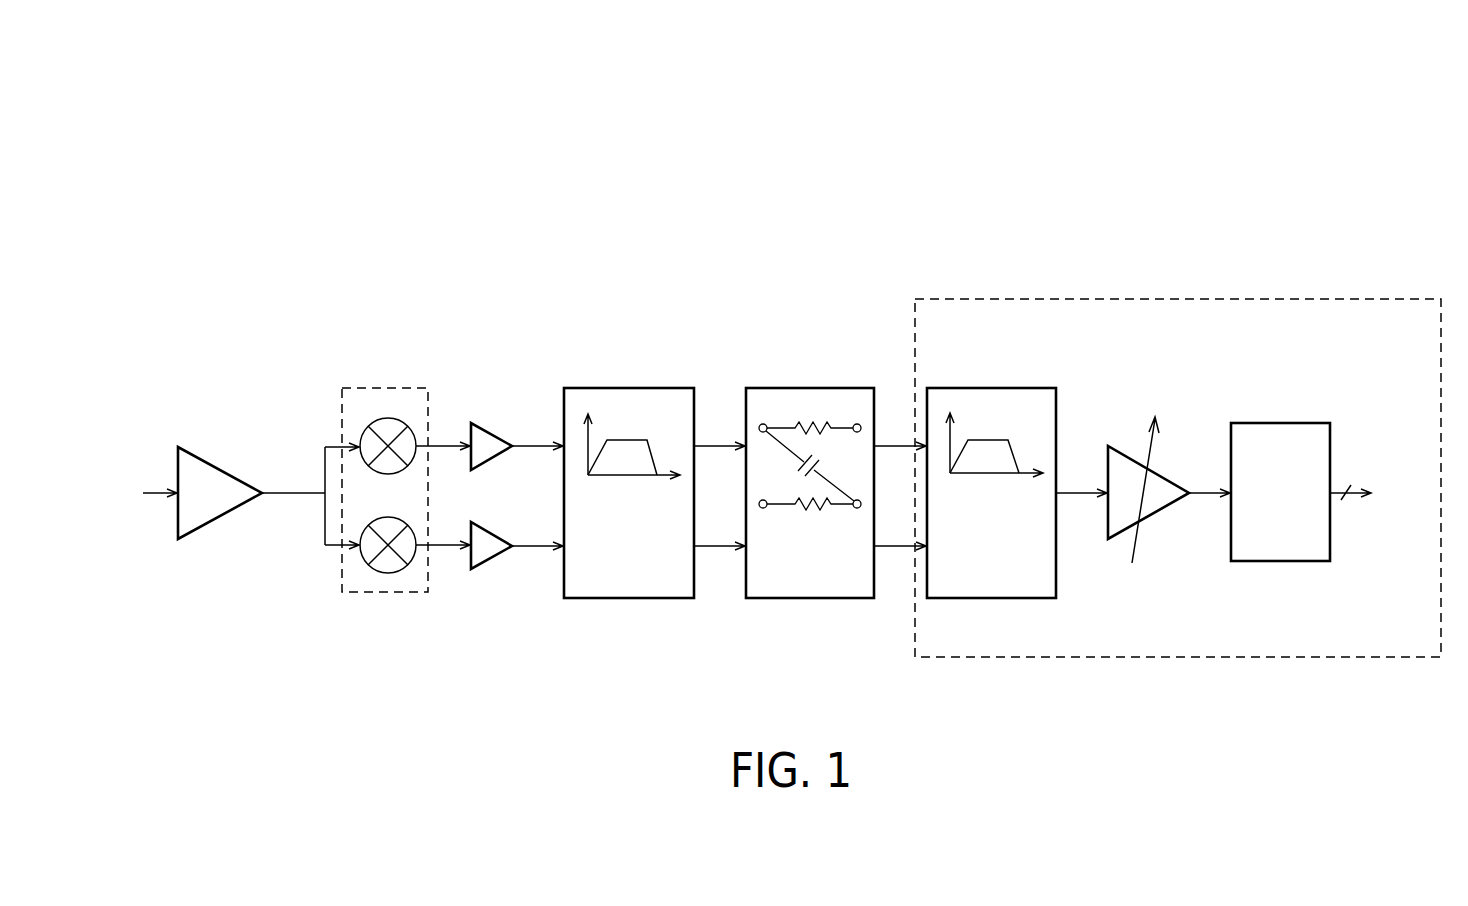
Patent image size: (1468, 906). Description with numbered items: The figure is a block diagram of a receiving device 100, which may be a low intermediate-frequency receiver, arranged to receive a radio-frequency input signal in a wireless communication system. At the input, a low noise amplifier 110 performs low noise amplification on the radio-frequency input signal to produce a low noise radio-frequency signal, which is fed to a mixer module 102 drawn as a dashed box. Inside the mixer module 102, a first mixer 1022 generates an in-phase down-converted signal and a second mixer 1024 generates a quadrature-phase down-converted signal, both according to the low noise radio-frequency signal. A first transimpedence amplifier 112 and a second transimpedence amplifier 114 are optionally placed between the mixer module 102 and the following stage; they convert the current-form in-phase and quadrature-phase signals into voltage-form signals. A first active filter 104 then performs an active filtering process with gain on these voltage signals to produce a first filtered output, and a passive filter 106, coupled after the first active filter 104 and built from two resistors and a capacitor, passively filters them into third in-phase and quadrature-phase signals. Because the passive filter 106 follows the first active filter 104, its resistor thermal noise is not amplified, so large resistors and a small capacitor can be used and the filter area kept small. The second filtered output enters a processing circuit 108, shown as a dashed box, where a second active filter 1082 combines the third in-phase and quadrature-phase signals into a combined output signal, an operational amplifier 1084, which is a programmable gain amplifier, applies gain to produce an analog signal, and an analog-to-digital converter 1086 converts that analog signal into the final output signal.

The receiving device 100 is at (1308, 142).
The mixer module 102 is at (380, 388).
The first mixer 1022 is at (397, 418).
The second mixer 1024 is at (388, 573).
The first active filter 104 is at (639, 388).
The passive filter 106 is at (808, 388).
The processing circuit 108 is at (1197, 299).
The second active filter 1082 is at (982, 388).
The operational amplifier 1084 is at (1123, 446).
The analog-to-digital converter 1086 is at (1287, 422).
The low noise amplifier 110 is at (215, 465).
The first transimpedence amplifier 112 is at (490, 424).
The second transimpedence amplifier 114 is at (490, 568).